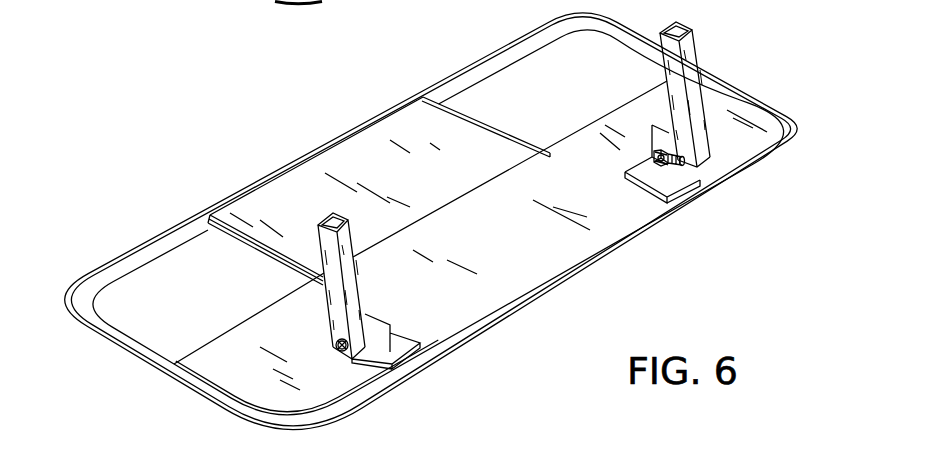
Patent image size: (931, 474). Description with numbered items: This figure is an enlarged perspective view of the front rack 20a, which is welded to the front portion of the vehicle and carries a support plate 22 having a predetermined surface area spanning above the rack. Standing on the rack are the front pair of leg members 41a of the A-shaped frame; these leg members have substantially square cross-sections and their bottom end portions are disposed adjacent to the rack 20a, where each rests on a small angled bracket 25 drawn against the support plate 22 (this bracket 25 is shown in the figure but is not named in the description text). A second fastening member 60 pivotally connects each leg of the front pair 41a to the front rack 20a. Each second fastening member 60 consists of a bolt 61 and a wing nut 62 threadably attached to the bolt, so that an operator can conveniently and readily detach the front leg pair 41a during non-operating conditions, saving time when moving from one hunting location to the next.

The front rack 20a is at (308, 100).
The support plate 22 is at (438, 192).
The front pair of leg members 41a is at (700, 52).
The bracket 25 is at (656, 177).
The second fastening members 60 is at (625, 122).
The bolt 61 is at (668, 168).
The wing nut 62 is at (687, 160).